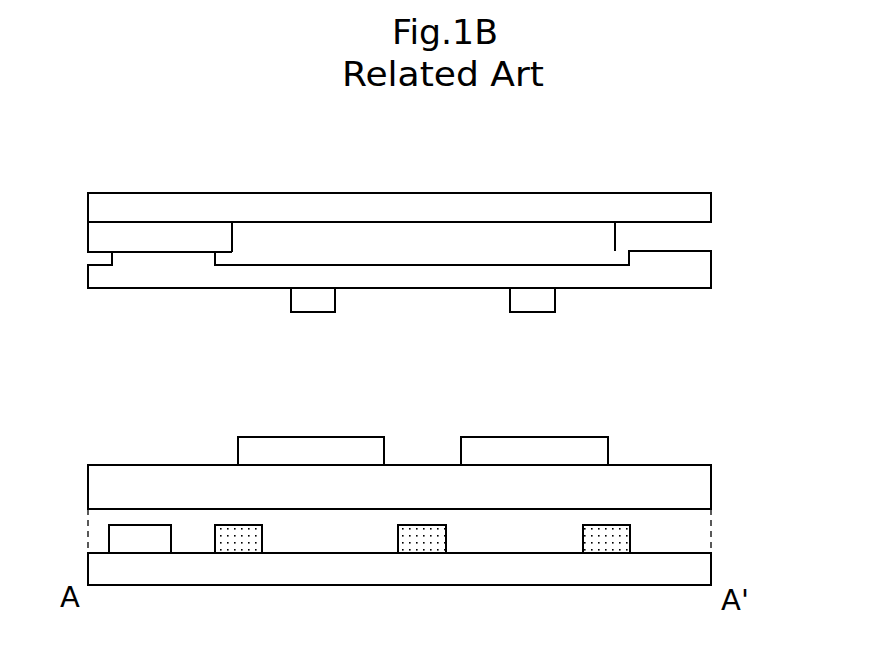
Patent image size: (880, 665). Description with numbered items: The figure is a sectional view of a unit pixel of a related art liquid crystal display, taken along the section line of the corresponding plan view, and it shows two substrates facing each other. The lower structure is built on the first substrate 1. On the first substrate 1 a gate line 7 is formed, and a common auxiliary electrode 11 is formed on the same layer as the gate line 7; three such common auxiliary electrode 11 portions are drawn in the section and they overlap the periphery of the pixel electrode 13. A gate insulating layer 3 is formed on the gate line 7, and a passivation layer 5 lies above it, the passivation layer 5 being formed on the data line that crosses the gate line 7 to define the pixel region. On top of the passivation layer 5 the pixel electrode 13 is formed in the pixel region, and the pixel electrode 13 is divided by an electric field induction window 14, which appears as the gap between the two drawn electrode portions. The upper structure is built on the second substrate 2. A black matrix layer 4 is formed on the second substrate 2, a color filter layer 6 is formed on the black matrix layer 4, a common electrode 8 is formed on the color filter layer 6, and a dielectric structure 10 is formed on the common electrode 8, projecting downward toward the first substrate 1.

The first substrate 1 is at (703, 564).
The second substrate 2 is at (699, 204).
The gate insulating layer 3 is at (98, 532).
The black matrix layer 4 is at (98, 238).
The passivation layer 5 is at (703, 486).
The color filter layer 6 is at (556, 235).
The gate line 7 is at (137, 545).
The common electrode 8 is at (695, 271).
The dielectric structure 10 is at (527, 305).
The common auxiliary electrode 11 is at (236, 543).
The pixel electrode 13 is at (311, 448).
The electric field induction window 14 is at (416, 451).